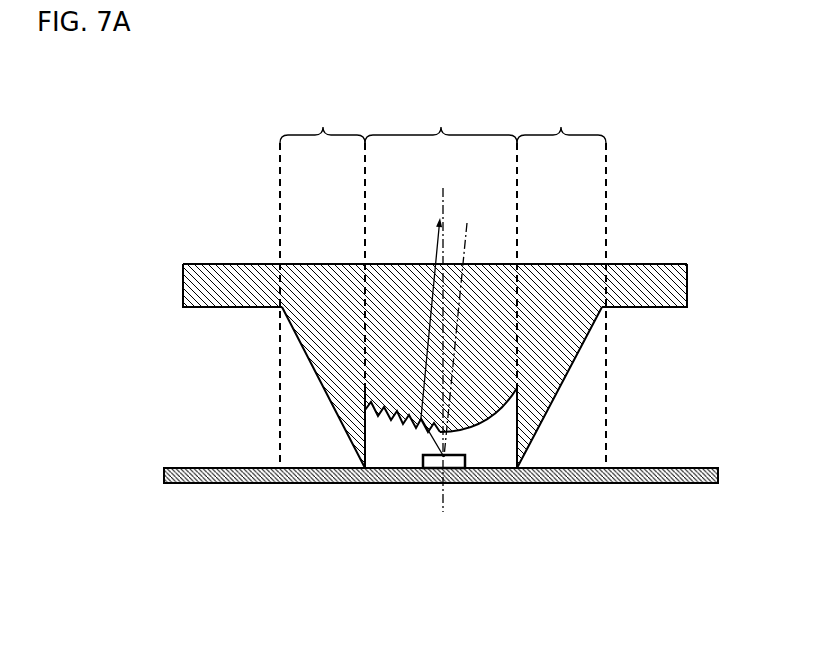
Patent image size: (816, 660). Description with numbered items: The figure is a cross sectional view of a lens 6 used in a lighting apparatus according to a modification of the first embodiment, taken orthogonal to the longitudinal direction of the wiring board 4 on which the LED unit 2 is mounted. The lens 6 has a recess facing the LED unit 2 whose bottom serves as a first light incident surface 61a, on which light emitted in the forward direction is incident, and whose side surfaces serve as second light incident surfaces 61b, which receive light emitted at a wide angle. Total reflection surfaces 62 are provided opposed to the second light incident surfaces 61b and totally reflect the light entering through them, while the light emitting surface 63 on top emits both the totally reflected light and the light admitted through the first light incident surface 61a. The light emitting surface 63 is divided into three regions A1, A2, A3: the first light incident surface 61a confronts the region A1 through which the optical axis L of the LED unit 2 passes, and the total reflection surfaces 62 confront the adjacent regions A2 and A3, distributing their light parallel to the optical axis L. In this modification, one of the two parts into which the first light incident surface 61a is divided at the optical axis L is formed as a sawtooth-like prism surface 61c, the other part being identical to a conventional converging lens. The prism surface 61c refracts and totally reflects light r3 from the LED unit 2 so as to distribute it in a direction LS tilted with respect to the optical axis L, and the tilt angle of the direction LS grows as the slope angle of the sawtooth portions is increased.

The lens 6 is at (218, 262).
The light emitting surface 63 is at (309, 263).
The total reflection surfaces 62 is at (307, 360).
The first light incident surface 61a is at (474, 424).
The second light incident surfaces 61b is at (365, 420).
The sawtooth-like prism surface 61c is at (365, 418).
The LED unit 2 is at (460, 483).
The wiring board 4 is at (528, 483).
The optical axis L is at (442, 331).
The tilted direction LS is at (464, 329).
The light r3 is at (429, 330).
The region A1 is at (441, 285).
The region A2 is at (322, 285).
The region A3 is at (561, 285).